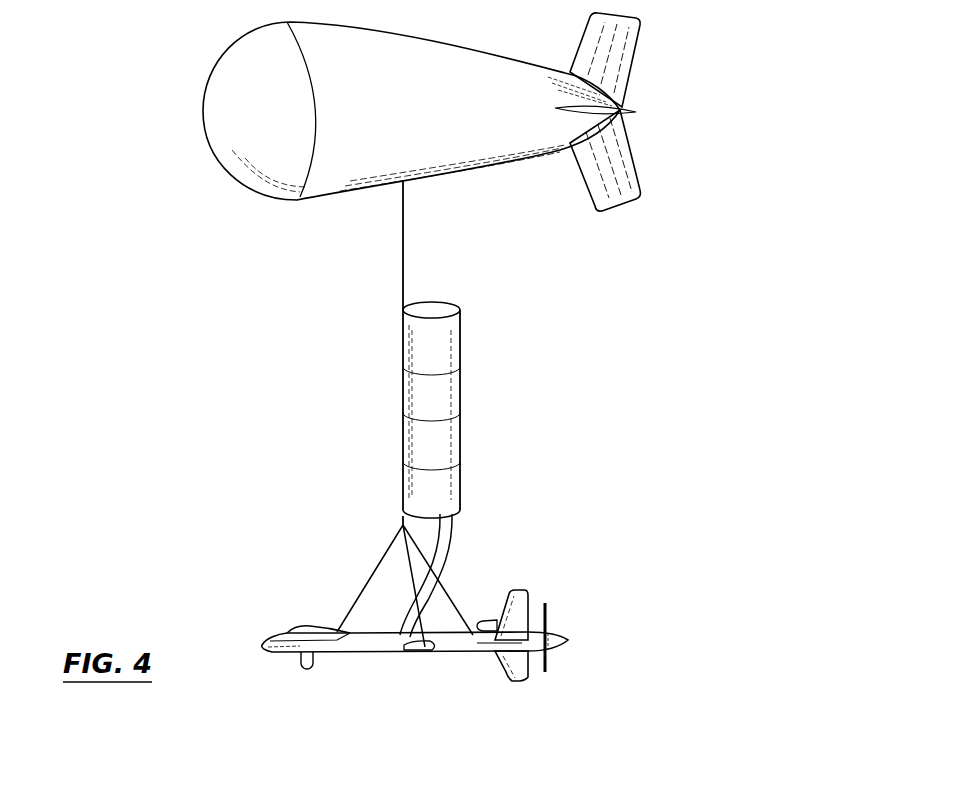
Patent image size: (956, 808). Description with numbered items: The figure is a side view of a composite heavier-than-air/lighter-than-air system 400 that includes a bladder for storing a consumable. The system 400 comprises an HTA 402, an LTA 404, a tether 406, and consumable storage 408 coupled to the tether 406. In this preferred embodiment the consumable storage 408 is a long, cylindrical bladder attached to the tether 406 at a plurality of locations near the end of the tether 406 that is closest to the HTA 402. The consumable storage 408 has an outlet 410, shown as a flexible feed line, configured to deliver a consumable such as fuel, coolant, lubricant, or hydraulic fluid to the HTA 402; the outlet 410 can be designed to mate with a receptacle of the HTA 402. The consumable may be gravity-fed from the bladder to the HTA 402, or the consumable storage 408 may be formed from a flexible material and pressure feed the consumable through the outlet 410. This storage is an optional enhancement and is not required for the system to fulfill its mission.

The system 400 is at (722, 120).
The HTA 402 is at (292, 634).
The LTA 404 is at (242, 50).
The tether 406 is at (403, 292).
The consumable storage 408 is at (460, 378).
The outlet 410 is at (443, 553).